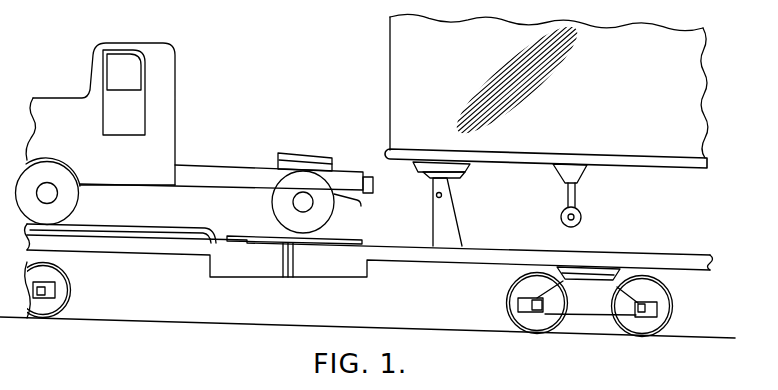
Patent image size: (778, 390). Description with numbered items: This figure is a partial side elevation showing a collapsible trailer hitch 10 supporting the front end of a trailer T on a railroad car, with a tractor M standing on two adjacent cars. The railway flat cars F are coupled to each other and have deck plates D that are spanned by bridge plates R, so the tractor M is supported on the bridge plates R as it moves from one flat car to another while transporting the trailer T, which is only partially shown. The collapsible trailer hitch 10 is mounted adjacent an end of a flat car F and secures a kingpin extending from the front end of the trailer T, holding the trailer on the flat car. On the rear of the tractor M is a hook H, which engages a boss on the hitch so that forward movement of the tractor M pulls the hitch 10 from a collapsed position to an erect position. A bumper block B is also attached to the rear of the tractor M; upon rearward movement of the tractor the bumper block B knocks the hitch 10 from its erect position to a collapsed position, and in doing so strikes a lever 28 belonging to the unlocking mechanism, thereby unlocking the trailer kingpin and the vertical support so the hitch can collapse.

The tractor M is at (178, 128).
The trailer T is at (402, 62).
The bumper block B is at (373, 190).
The hook H is at (361, 207).
The bridge plates R is at (248, 240).
The deck plates D is at (628, 250).
The railway flat cars F is at (113, 250).
The collapsible trailer hitch 10 is at (459, 210).
The lever 28 is at (433, 192).